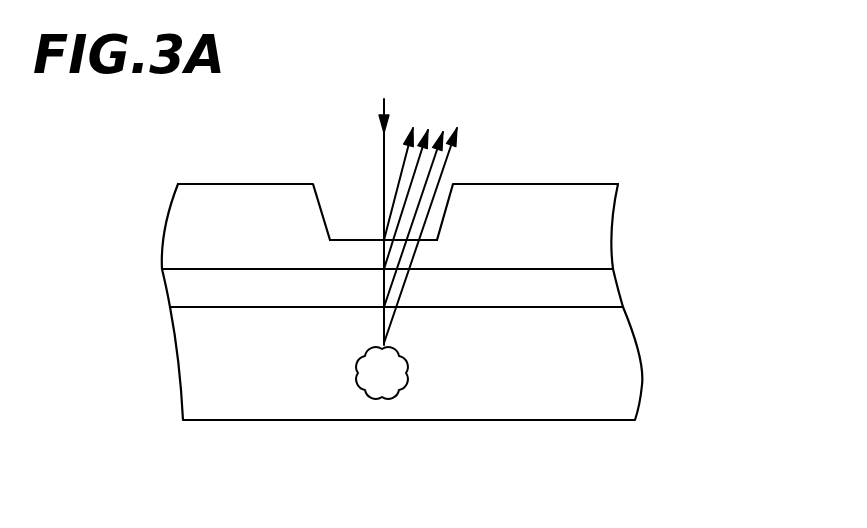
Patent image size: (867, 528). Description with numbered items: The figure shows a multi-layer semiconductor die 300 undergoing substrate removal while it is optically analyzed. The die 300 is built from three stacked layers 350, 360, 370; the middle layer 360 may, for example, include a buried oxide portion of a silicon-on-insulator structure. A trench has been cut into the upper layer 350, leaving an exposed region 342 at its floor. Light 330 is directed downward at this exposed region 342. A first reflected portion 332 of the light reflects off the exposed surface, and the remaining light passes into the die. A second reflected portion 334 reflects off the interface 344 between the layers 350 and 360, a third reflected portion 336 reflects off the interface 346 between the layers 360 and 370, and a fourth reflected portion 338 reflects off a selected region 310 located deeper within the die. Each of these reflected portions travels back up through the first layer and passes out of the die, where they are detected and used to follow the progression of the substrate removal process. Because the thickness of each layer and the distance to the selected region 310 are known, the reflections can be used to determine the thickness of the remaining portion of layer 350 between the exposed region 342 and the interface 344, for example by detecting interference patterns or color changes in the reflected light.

The semiconductor die 300 is at (508, 302).
The selected region 310 is at (402, 385).
The light 330 is at (382, 165).
The first reflected portion 332 is at (418, 122).
The second reflected portion 334 is at (437, 123).
The third reflected portion 336 is at (447, 130).
The fourth reflected portion 338 is at (447, 160).
The exposed region 342 is at (357, 241).
The interface 344 is at (212, 269).
The interface 346 is at (257, 307).
The layer 350 is at (593, 228).
The layer 360 is at (603, 287).
The layer 370 is at (627, 372).